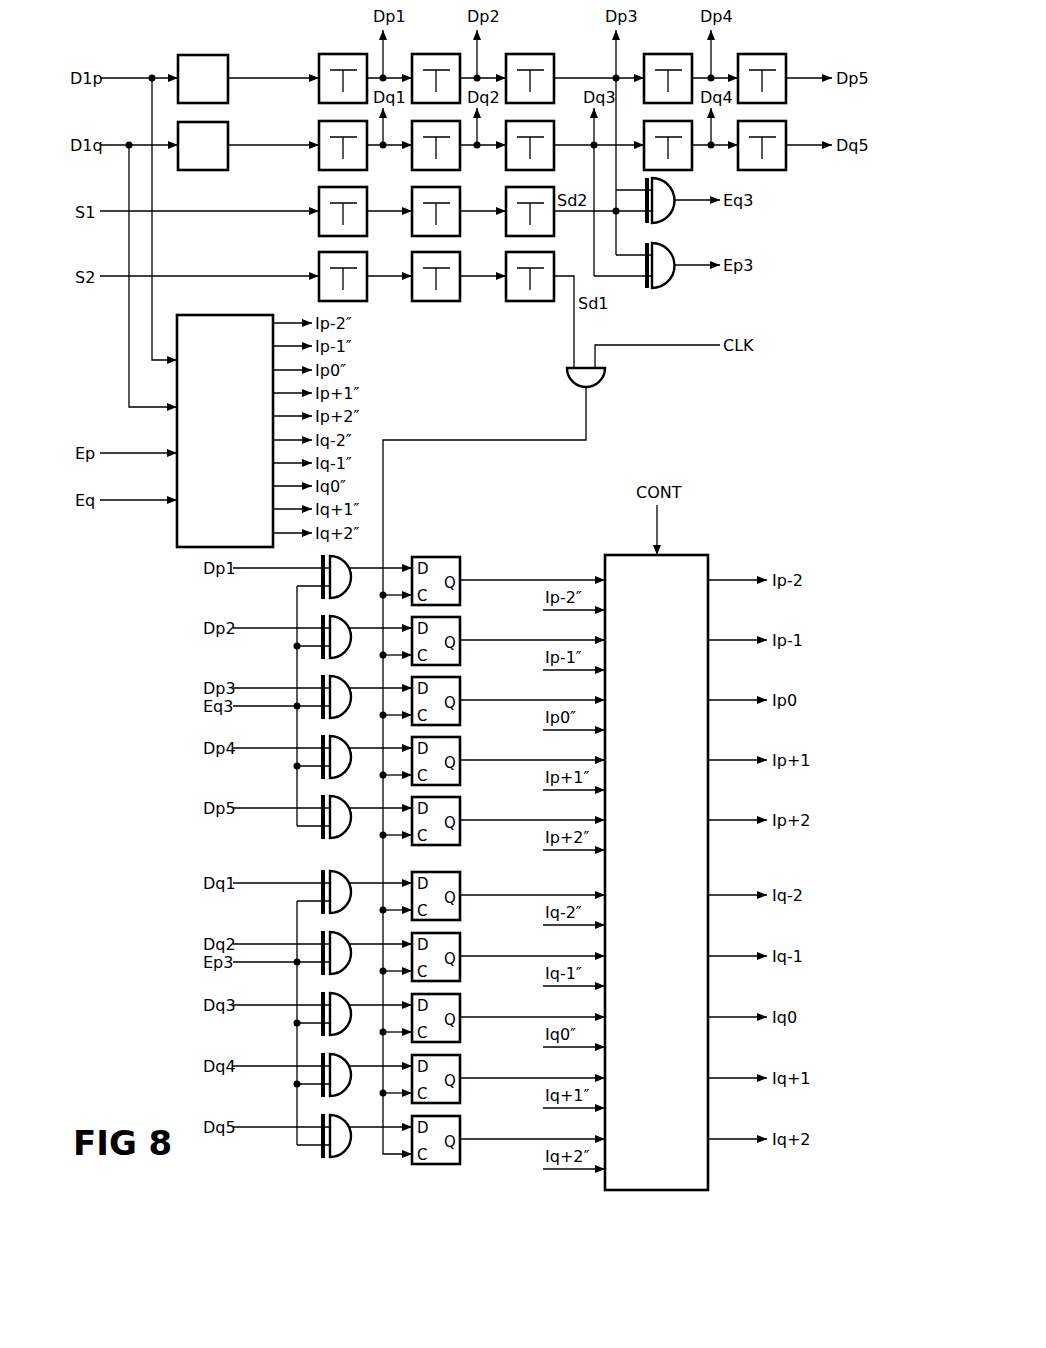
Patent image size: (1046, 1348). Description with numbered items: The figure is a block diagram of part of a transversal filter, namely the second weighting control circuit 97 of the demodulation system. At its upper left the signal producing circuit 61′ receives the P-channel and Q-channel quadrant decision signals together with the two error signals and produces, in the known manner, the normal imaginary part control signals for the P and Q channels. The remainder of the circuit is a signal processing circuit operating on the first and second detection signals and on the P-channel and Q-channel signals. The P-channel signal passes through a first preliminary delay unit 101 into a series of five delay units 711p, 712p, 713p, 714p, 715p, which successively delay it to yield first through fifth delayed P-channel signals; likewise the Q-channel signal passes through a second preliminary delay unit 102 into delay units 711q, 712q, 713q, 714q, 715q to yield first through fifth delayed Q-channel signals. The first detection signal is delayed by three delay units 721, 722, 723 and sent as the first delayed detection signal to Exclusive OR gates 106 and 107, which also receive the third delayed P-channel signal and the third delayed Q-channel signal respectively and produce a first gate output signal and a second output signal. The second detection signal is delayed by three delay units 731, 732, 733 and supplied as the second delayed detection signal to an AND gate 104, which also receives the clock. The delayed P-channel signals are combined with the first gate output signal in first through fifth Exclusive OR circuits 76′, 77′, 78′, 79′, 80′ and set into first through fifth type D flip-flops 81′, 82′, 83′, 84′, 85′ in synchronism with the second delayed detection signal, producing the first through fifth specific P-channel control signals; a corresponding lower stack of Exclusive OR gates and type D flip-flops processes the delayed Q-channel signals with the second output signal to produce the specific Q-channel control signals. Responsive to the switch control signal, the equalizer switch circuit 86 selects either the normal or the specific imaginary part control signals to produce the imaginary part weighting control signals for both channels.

The first preliminary delay unit 101 is at (228, 57).
The second preliminary delay unit 102 is at (228, 124).
The delay unit 711p is at (358, 54).
The delay unit 712p is at (451, 54).
The delay unit 713p is at (545, 54).
The delay unit 714p is at (683, 54).
The delay unit 715p is at (777, 54).
The delay unit 711q is at (367, 162).
The delay unit 712q is at (460, 162).
The delay unit 713q is at (554, 162).
The delay unit 714q is at (692, 162).
The delay unit 715q is at (786, 165).
The delay unit 721 is at (367, 228).
The delay unit 722 is at (460, 228).
The delay unit 723 is at (554, 228).
The delay unit 731 is at (367, 293).
The delay unit 732 is at (460, 293).
The delay unit 733 is at (540, 303).
The Exclusive OR gate 106 is at (673, 181).
The Exclusive OR gate 107 is at (673, 246).
The AND gate 104 is at (603, 385).
The signal producing circuit 61′ is at (176, 543).
The equalizer switch circuit 86 is at (687, 554).
The second weighting control circuit 97 is at (150, 770).
The first Exclusive OR circuit 76′ is at (346, 595).
The second Exclusive OR circuit 77′ is at (346, 655).
The third Exclusive OR circuit 78′ is at (346, 715).
The fourth Exclusive OR circuit 79′ is at (346, 775).
The fifth Exclusive OR circuit 80′ is at (346, 835).
The first type D flip-flop 81′ is at (461, 586).
The second type D flip-flop 82′ is at (461, 646).
The third type D flip-flop 83′ is at (461, 706).
The fourth type D flip-flop 84′ is at (461, 766).
The fifth type D flip-flop 85′ is at (461, 826).